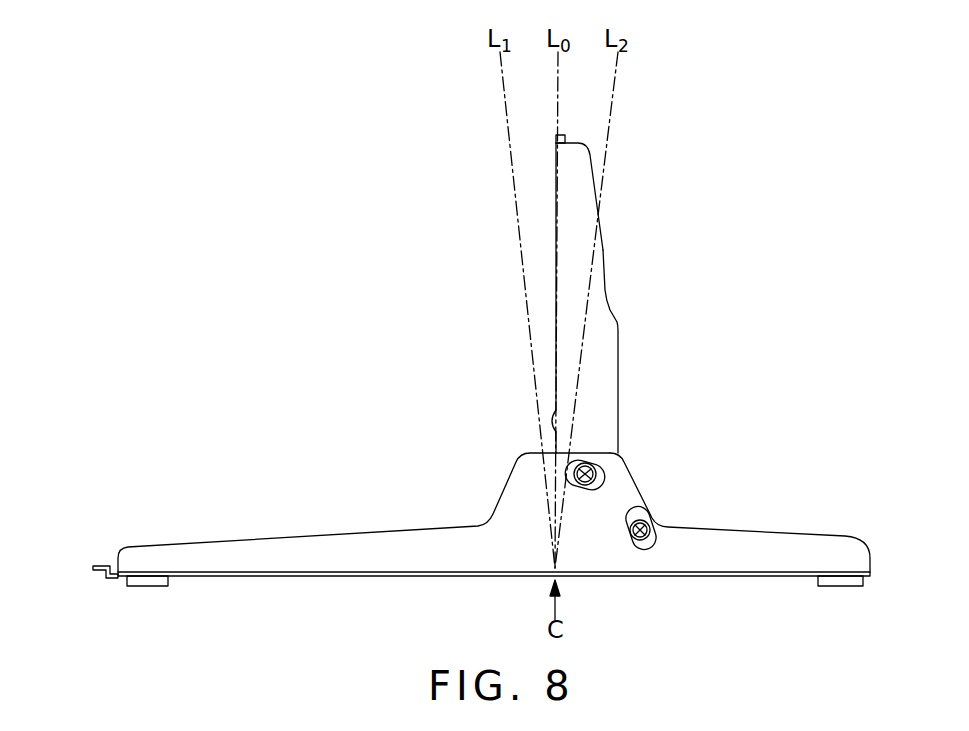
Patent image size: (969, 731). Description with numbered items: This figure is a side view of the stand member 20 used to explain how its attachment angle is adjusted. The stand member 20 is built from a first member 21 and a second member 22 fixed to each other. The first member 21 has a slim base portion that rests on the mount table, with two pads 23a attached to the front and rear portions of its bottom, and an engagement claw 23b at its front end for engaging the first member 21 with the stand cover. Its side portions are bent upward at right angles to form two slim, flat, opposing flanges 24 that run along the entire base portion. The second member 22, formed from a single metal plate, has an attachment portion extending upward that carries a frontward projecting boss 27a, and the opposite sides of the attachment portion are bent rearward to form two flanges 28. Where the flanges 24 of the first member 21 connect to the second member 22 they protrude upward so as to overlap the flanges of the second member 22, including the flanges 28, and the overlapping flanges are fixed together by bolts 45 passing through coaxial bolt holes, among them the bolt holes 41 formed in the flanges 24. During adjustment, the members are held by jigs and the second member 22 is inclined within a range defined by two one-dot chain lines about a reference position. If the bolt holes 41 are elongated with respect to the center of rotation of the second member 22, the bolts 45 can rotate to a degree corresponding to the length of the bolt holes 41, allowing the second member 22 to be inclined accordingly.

The stand member 20 is at (746, 243).
The first member 21 is at (398, 520).
The second member 22 is at (613, 226).
The pads 23a is at (150, 588).
The engagement claw 23b is at (95, 566).
The first flanges 24 is at (752, 540).
The boss 27a is at (549, 420).
The third flanges 28 is at (612, 352).
The first bolt holes 41 is at (600, 486).
The bolts 45 is at (651, 508).